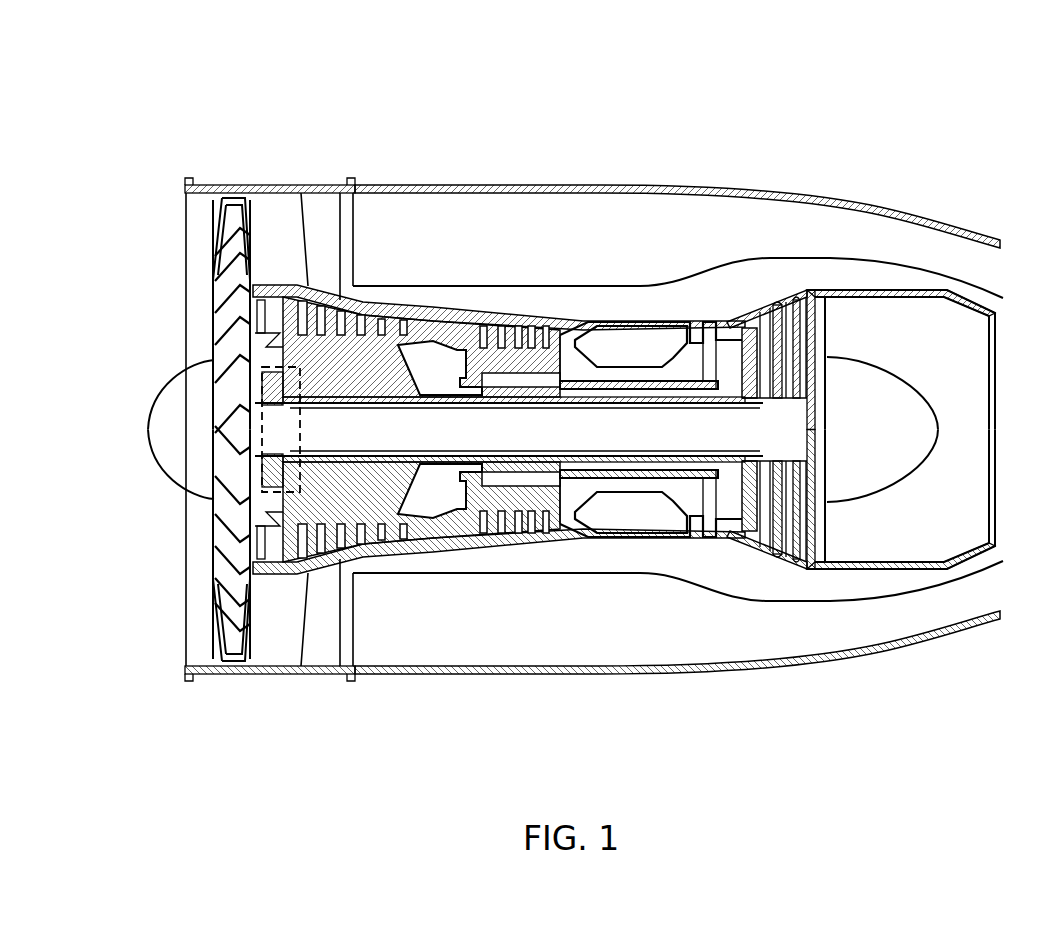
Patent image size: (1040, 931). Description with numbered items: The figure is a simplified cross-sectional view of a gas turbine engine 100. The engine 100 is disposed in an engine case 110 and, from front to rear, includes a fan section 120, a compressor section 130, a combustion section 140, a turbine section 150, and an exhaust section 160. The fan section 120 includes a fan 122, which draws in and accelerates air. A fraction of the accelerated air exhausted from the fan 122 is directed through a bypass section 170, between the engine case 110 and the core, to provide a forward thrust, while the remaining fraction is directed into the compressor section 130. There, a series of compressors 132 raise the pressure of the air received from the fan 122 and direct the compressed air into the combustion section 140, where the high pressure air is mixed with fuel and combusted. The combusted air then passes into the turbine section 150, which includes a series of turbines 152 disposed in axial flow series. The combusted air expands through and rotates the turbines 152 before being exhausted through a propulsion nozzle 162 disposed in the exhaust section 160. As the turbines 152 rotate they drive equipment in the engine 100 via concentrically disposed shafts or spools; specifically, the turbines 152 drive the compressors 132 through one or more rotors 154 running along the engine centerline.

The gas turbine engine 100 is at (820, 132).
The engine case 110 is at (393, 186).
The fan section 120 is at (265, 710).
The fan 122 is at (222, 284).
The compressor section 130 is at (512, 710).
The compressors 132 is at (372, 385).
The combustion section 140 is at (668, 710).
The turbine section 150 is at (826, 710).
The turbines 152 is at (812, 575).
The rotors 154 is at (447, 410).
The exhaust section 160 is at (950, 710).
The propulsion nozzle 162 is at (890, 247).
The bypass section 170 is at (523, 228).